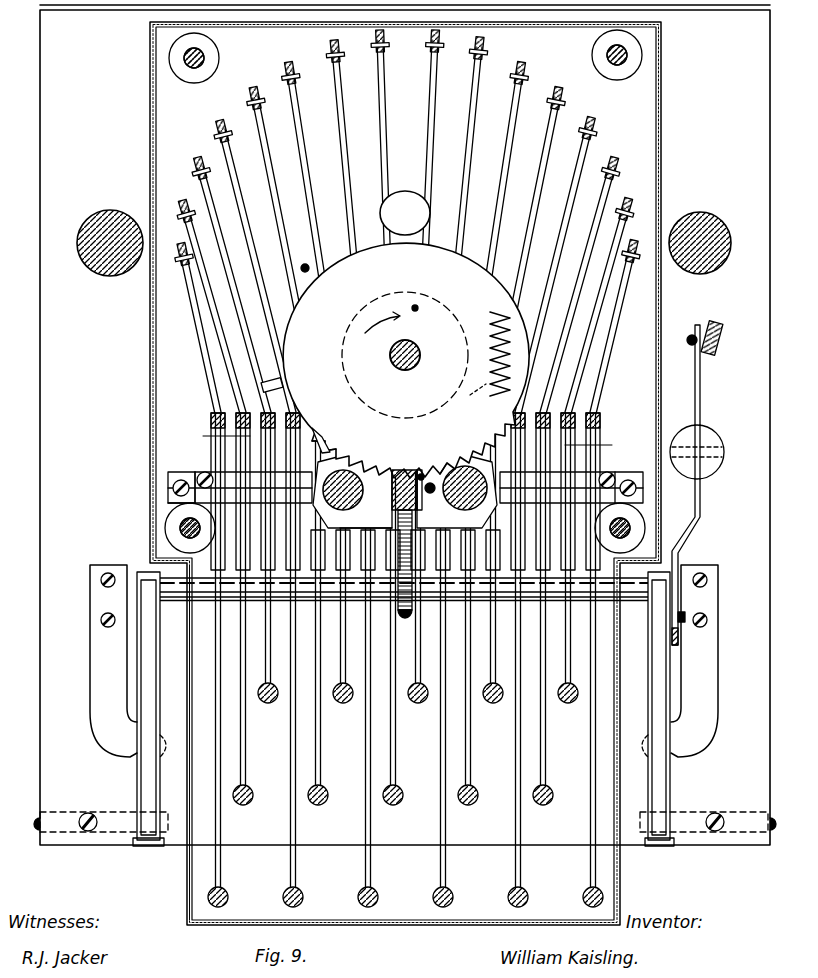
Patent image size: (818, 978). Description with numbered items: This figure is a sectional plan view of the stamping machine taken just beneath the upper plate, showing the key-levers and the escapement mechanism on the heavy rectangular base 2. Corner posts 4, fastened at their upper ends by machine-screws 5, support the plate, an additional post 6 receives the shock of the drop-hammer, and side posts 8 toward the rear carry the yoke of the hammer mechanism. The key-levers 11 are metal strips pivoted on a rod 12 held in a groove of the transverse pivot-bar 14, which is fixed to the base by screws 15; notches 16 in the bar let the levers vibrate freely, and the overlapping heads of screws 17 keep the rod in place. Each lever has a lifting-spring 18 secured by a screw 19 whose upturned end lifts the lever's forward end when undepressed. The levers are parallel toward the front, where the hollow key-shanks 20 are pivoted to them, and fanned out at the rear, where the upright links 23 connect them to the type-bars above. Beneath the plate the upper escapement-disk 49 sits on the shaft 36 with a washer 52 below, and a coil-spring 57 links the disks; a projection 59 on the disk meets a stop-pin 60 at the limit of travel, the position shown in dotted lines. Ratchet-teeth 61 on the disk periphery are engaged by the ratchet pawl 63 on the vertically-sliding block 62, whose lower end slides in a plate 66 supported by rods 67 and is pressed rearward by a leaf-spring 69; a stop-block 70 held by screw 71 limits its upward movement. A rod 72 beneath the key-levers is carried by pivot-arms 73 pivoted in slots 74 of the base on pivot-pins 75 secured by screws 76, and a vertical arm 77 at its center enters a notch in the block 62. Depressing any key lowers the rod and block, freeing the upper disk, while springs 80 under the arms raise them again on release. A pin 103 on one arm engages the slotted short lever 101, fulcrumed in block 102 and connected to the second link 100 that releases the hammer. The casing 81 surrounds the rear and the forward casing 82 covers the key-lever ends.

The base 2 is at (46, 378).
The posts 4 is at (208, 60).
The machine-screws 5 is at (190, 66).
The additional post 6 is at (402, 201).
The posts 8 is at (112, 230).
The key-levers 11 is at (436, 116).
The rod 12 is at (352, 502).
The pivot-bar 14 is at (322, 436).
The screws 15 is at (168, 492).
The notches 16 is at (235, 470).
The screws 17 is at (212, 480).
The lifting-spring 18 is at (407, 435).
The screw 19 is at (246, 421).
The key-shanks 20 is at (253, 797).
The links 23 is at (199, 163).
The shaft 36 is at (418, 354).
The escapement-disk 49 is at (461, 272).
The washer 52 is at (348, 392).
The coil-spring 57 is at (481, 376).
The projection 59 is at (278, 380).
The stop-pin 60 is at (305, 264).
The ratchet-teeth 61 is at (368, 457).
The sliding block 62 is at (417, 466).
The ratchet pawl 63 is at (398, 468).
The plate 66 is at (457, 453).
The rods 67 is at (343, 480).
The leaf-spring 69 is at (358, 522).
The stop-block 70 is at (424, 482).
The screw 71 is at (446, 506).
The rod 72 is at (635, 603).
The pivot-arms 73 is at (150, 710).
The slots 74 is at (150, 843).
The pivot-pins 75 is at (37, 823).
The screws 76 is at (88, 815).
The vertical arm 77 is at (413, 532).
The springs 80 is at (102, 679).
The casing 81 is at (281, 26).
The forward casing 82 is at (187, 668).
The second link 100 is at (742, 313).
The short lever 101 is at (698, 401).
The block 102 is at (710, 443).
The pin 103 is at (684, 618).